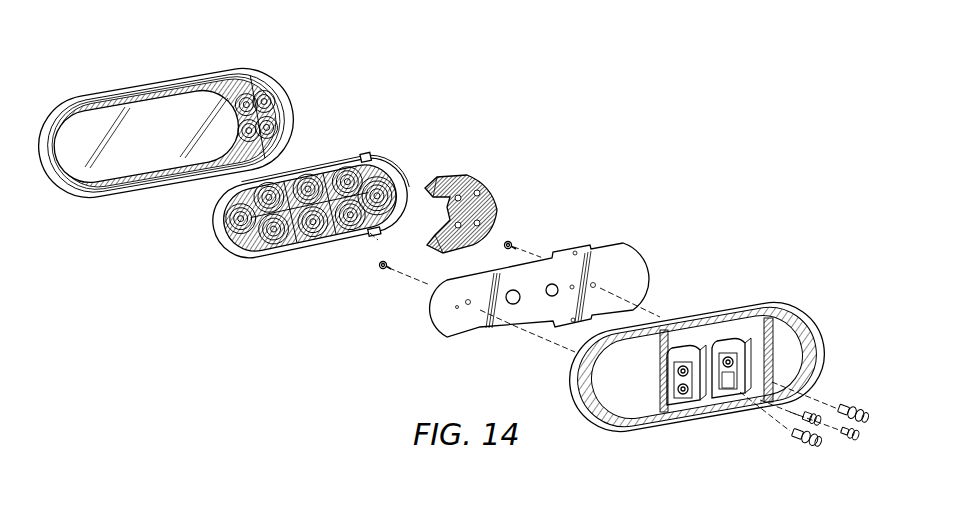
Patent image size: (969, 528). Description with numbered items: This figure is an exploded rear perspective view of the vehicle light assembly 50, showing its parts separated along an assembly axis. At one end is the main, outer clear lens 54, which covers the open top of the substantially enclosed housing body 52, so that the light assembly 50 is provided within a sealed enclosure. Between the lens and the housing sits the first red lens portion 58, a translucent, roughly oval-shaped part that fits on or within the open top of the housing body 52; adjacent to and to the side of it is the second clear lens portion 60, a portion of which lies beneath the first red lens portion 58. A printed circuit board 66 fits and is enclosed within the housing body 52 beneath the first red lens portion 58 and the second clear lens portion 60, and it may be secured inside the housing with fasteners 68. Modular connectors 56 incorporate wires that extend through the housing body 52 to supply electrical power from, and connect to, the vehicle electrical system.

The light assembly 50 is at (577, 110).
The housing body 52 is at (805, 338).
The outer clear lens 54 is at (243, 68).
The modular connectors 56 is at (730, 343).
The first red lens portion 58 is at (362, 160).
The second clear lens portion 60 is at (453, 177).
The printed circuit board 66 is at (447, 322).
The fasteners 68 is at (511, 243).